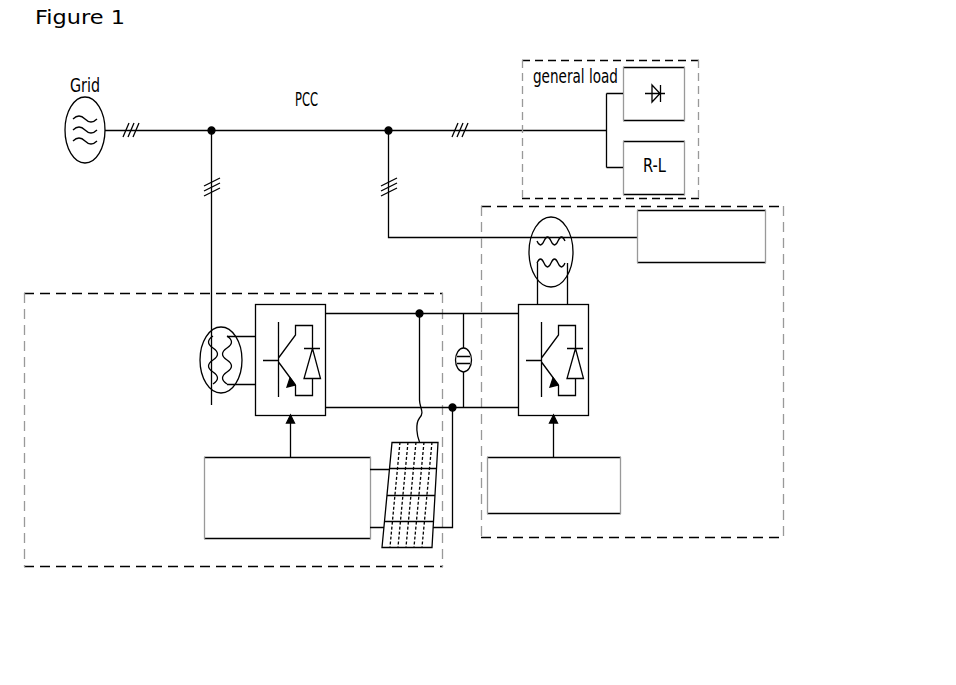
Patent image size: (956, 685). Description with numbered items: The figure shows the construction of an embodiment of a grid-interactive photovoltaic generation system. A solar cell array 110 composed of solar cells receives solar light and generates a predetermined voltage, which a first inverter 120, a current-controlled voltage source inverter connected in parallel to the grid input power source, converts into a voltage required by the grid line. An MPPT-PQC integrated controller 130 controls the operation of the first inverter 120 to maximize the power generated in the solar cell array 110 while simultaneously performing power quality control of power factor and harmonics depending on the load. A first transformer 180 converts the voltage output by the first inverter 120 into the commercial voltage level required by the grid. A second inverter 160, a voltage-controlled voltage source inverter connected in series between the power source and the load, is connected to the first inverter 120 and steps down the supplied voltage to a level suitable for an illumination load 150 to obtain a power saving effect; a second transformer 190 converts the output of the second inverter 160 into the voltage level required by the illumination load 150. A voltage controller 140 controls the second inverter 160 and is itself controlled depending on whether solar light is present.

The solar cell array 110 is at (415, 547).
The first inverter 120 is at (257, 398).
The MPPT-PQC integrated controller 130 is at (285, 538).
The voltage controller 140 is at (553, 513).
The illumination load 150 is at (765, 237).
The second inverter 160 is at (577, 415).
The first transformer 180 is at (209, 330).
The second transformer 190 is at (570, 267).